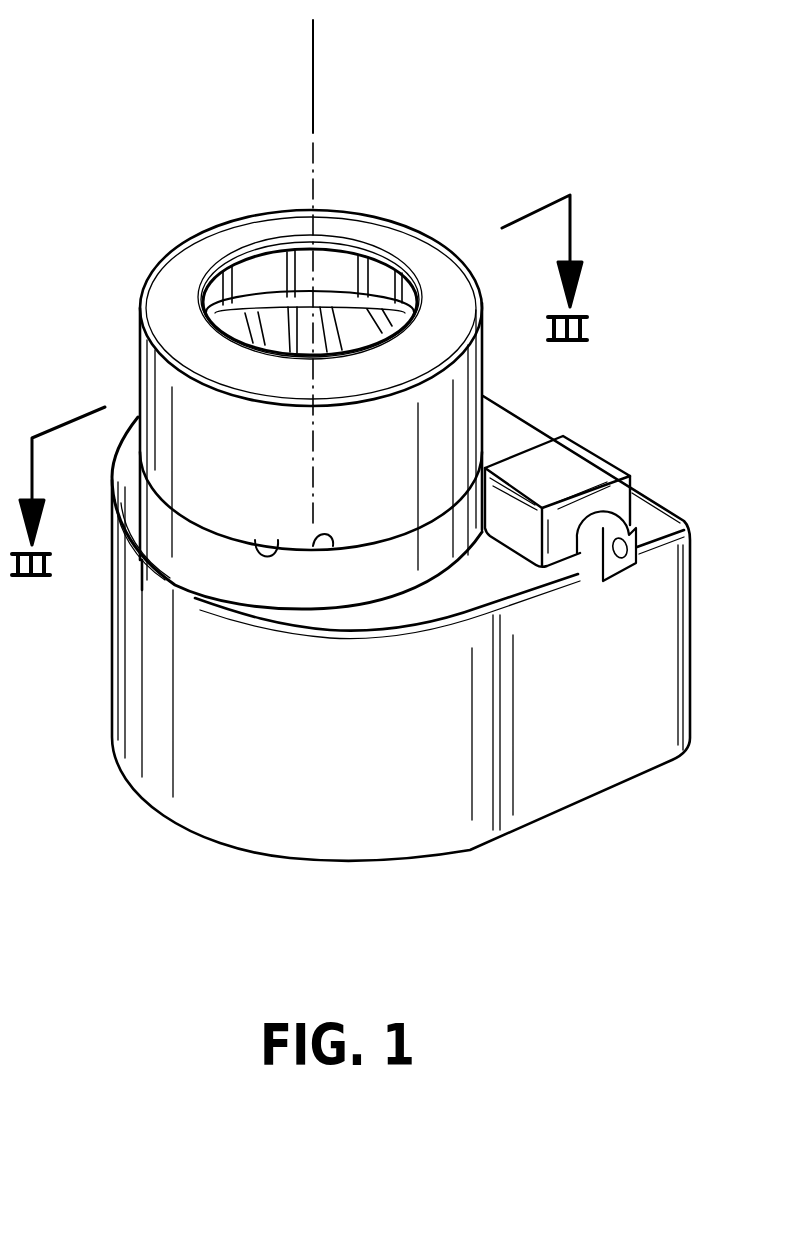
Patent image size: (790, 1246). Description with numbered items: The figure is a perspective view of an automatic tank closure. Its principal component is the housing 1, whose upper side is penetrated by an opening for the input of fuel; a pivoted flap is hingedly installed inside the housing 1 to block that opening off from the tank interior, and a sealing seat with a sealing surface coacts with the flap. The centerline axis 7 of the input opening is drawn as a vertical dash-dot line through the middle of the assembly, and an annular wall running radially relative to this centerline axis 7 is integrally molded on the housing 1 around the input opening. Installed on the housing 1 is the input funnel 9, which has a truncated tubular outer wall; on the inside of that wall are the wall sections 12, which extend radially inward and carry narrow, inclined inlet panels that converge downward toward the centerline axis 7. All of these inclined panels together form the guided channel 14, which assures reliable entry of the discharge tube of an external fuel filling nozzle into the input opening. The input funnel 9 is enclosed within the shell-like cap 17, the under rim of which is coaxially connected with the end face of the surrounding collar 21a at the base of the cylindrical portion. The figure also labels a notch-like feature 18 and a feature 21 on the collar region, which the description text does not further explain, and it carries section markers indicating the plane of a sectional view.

The housing 1 is at (152, 714).
The centerline axis 7 is at (313, 68).
The input funnel 9 is at (360, 326).
The wall sections 12 is at (295, 332).
The guided channel 14 is at (258, 290).
The shell-like cap 17 is at (315, 250).
The notch 18 is at (262, 546).
The coil body collar 21 is at (335, 548).
The surrounding collar 21a is at (318, 590).